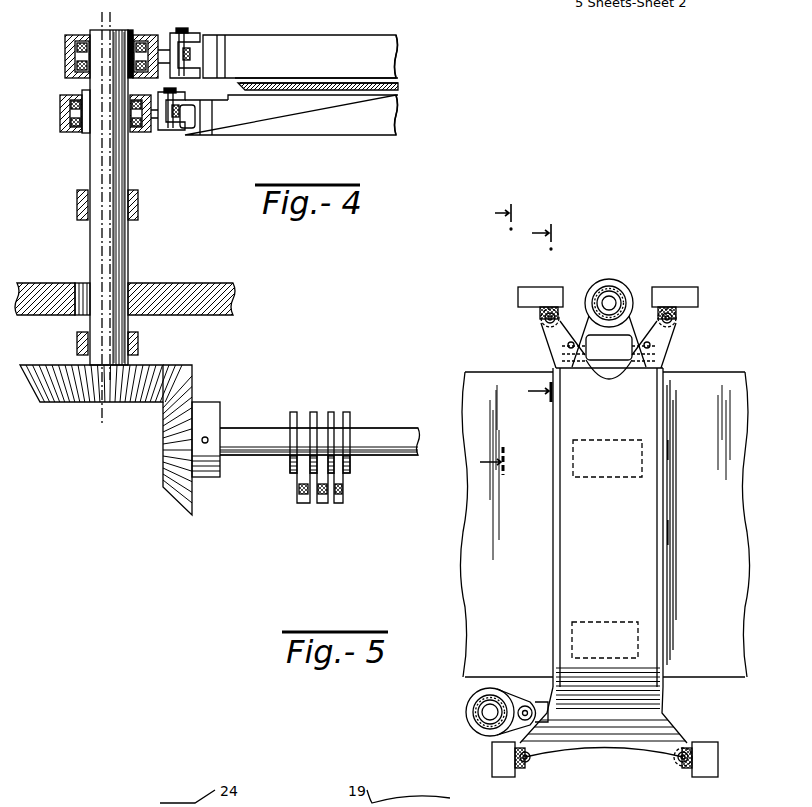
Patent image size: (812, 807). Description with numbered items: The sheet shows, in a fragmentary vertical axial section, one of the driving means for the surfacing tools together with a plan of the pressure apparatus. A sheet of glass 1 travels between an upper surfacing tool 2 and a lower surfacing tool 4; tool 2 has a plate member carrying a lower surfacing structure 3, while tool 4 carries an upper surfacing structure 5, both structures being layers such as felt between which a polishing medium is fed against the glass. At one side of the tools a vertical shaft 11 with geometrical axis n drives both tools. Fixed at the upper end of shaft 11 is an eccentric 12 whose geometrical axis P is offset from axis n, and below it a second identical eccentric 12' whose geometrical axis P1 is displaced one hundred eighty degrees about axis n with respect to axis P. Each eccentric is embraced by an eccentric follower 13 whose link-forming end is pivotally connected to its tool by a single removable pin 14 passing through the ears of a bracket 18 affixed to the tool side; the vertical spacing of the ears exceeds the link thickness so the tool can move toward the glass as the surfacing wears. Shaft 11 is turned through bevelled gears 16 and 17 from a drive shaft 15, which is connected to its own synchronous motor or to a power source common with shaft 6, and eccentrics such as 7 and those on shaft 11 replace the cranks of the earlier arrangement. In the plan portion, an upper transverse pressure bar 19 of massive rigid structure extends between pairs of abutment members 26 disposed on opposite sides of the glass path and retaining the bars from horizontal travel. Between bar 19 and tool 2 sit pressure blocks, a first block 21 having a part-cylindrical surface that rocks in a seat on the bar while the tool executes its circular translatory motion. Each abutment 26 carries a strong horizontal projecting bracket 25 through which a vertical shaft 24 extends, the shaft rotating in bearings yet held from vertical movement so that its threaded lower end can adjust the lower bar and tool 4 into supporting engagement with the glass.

In FIG. 4, the sheet of glass 1 is at (397, 88).
In FIG. 4, the upper surfacing tool 2 is at (286, 36).
In FIG. 4, the lower surfacing structure 3 is at (339, 78).
In FIG. 4, the lower surfacing tool 4 is at (274, 131).
In FIG. 4, the upper surfacing structure 5 is at (370, 97).
In FIG. 4, the vertical shaft 11 is at (97, 238).
In FIG. 4, the eccentric 12 is at (142, 45).
In FIG. 4, the second eccentric 12' is at (53, 123).
In FIG. 4, the eccentric follower 13 is at (151, 42).
In FIG. 4, the removable pin 14 is at (173, 90).
In FIG. 4, the drive shaft 15 is at (380, 436).
In FIG. 4, the bevelled gear 16 is at (70, 398).
In FIG. 4, the bevelled gear 17 is at (163, 440).
In FIG. 4, the bracket 18 is at (193, 113).
In FIG. 5, the upper transverse pressure bar 19 is at (568, 410).
In FIG. 5, the first block 21 is at (598, 476).
In FIG. 5, the shaft 24 is at (543, 322).
In FIG. 5, the bracket 25 is at (541, 310).
In FIG. 5, the abutment member 26 is at (545, 290).
In FIG. 5, the shaft 6 is at (500, 339).
In FIG. 5, the eccentric 7 is at (545, 313).
In FIG. 4, the geometrical axis P is at (117, 163).
In FIG. 4, the axis P1 is at (102, 156).
In FIG. 4, the geometrical axis n is at (108, 178).